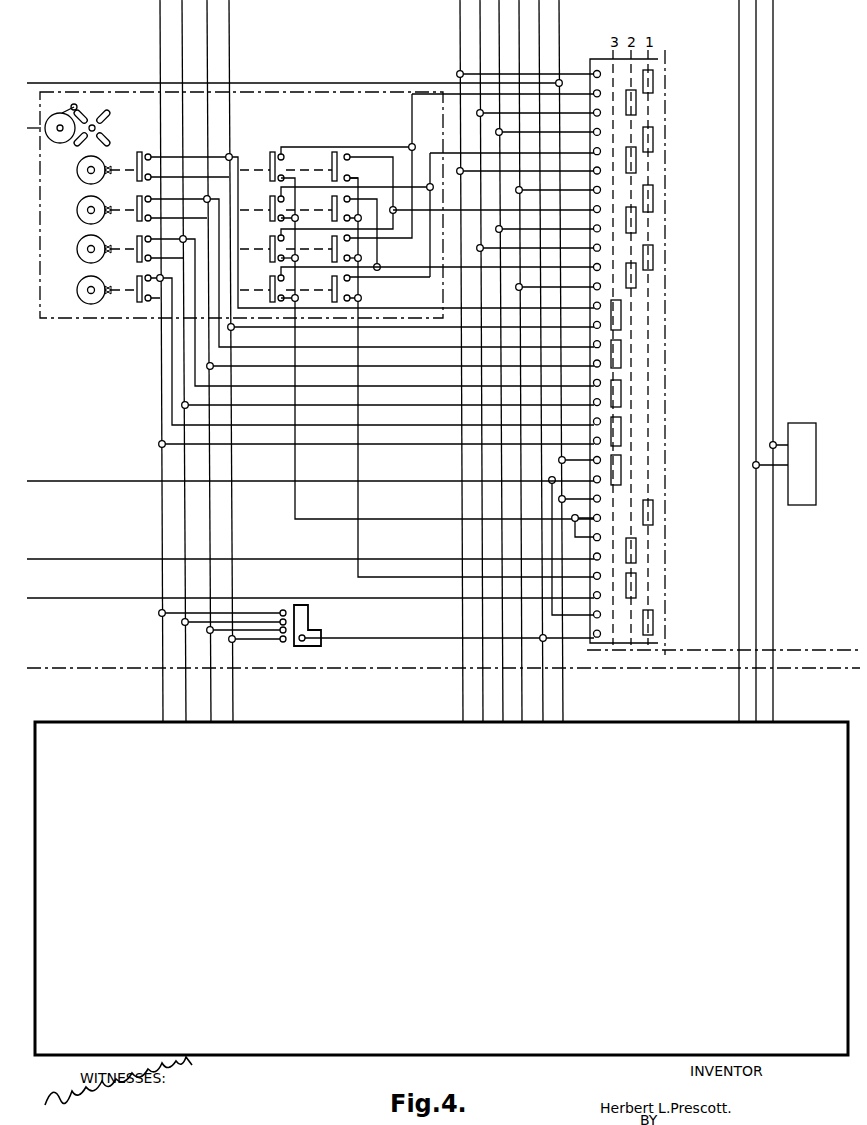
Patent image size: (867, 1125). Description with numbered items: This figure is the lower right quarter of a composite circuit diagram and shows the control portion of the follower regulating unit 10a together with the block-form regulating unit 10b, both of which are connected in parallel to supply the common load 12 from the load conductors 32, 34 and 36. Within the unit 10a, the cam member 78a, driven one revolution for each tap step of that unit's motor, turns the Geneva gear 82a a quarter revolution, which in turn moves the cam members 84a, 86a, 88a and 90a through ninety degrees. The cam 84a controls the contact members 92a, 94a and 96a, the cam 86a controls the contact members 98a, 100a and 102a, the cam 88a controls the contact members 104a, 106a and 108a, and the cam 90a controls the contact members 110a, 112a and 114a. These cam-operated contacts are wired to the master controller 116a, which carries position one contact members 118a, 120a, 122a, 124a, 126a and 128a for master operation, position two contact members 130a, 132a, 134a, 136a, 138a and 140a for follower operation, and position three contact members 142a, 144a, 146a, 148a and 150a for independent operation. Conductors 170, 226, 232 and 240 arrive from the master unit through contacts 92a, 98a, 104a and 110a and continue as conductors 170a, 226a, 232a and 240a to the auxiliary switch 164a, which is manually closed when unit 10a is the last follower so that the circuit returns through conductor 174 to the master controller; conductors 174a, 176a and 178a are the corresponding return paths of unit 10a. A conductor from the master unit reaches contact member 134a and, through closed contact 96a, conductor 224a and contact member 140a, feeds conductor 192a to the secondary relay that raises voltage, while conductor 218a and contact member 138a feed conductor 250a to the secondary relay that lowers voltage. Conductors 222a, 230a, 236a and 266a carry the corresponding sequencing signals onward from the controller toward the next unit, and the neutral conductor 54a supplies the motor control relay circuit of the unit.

The regulating unit 10a is at (390, 668).
The regulating unit 10b is at (320, 1057).
The load 12 is at (797, 422).
The load conductor 32 is at (739, 112).
The load conductor 34 is at (756, 73).
The load conductor 36 is at (773, 43).
The neutral conductor 54a is at (320, 83).
The cam member 78a is at (55, 113).
The Geneva gear 82a is at (104, 118).
The cam member 84a is at (78, 170).
The cam member 86a is at (78, 210).
The cam member 88a is at (84, 237).
The cam member 90a is at (78, 279).
The contact member 92a is at (137, 155).
The contact member 94a is at (269, 155).
The contact member 96a is at (437, 193).
The contact member 98a is at (136, 203).
The contact member 100a is at (269, 204).
The contact member 102a is at (332, 210).
The contact member 104a is at (136, 243).
The contact member 106a is at (269, 244).
The contact member 108a is at (332, 250).
The contact member 110a is at (136, 283).
The contact member 112a is at (269, 284).
The contact member 114a is at (332, 290).
The master controller 116a is at (668, 381).
The contact member 118a is at (653, 82).
The contact member 120a is at (653, 139).
The contact member 122a is at (653, 196).
The contact member 124a is at (653, 254).
The contact member 126a is at (653, 513).
The contact member 128a is at (653, 622).
The contact member 130a is at (636, 106).
The contact member 132a is at (636, 165).
The contact member 134a is at (636, 223).
The contact member 136a is at (636, 281).
The contact member 138a is at (636, 550).
The contact member 140a is at (636, 585).
The contact member 142a is at (621, 314).
The contact member 144a is at (621, 351).
The contact member 146a is at (621, 395).
The contact member 148a is at (621, 432).
The contact member 150a is at (621, 468).
The auxiliary switch 164a is at (309, 614).
The conductor 170 is at (229, 55).
The conductor 170a is at (229, 467).
The conductor 174 is at (548, 23).
The conductor 174a is at (548, 695).
The conductor 176a is at (573, 617).
The conductor 178a is at (127, 482).
The conductor 192a is at (122, 599).
The conductor 218a is at (296, 467).
The conductor 222a is at (503, 507).
The conductor 224a is at (359, 458).
The conductor 226 is at (207, 33).
The conductor 226a is at (211, 543).
The conductor 230a is at (522, 537).
The conductor 232 is at (182, 28).
The conductor 232a is at (184, 533).
The conductor 236a is at (483, 488).
The conductor 240 is at (160, 47).
The conductor 240a is at (161, 513).
The conductor 250a is at (130, 560).
The conductor 266a is at (462, 469).